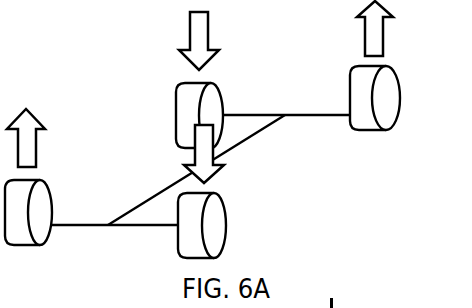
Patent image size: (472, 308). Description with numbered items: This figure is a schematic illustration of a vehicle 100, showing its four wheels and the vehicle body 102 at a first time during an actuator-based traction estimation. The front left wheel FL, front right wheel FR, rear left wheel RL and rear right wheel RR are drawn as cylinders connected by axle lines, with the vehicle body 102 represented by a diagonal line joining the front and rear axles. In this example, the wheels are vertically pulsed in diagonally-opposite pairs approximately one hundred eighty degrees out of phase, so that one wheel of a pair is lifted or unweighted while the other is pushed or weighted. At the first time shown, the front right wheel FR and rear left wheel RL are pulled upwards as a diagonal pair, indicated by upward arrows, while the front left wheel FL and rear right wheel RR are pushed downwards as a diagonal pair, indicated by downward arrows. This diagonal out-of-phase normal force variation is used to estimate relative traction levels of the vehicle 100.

The vehicle 100 is at (267, 81).
The vehicle body 102 is at (247, 137).
The front left wheel FL is at (202, 85).
The front right wheel FR is at (385, 70).
The rear left wheel RL is at (37, 183).
The rear right wheel RR is at (214, 194).